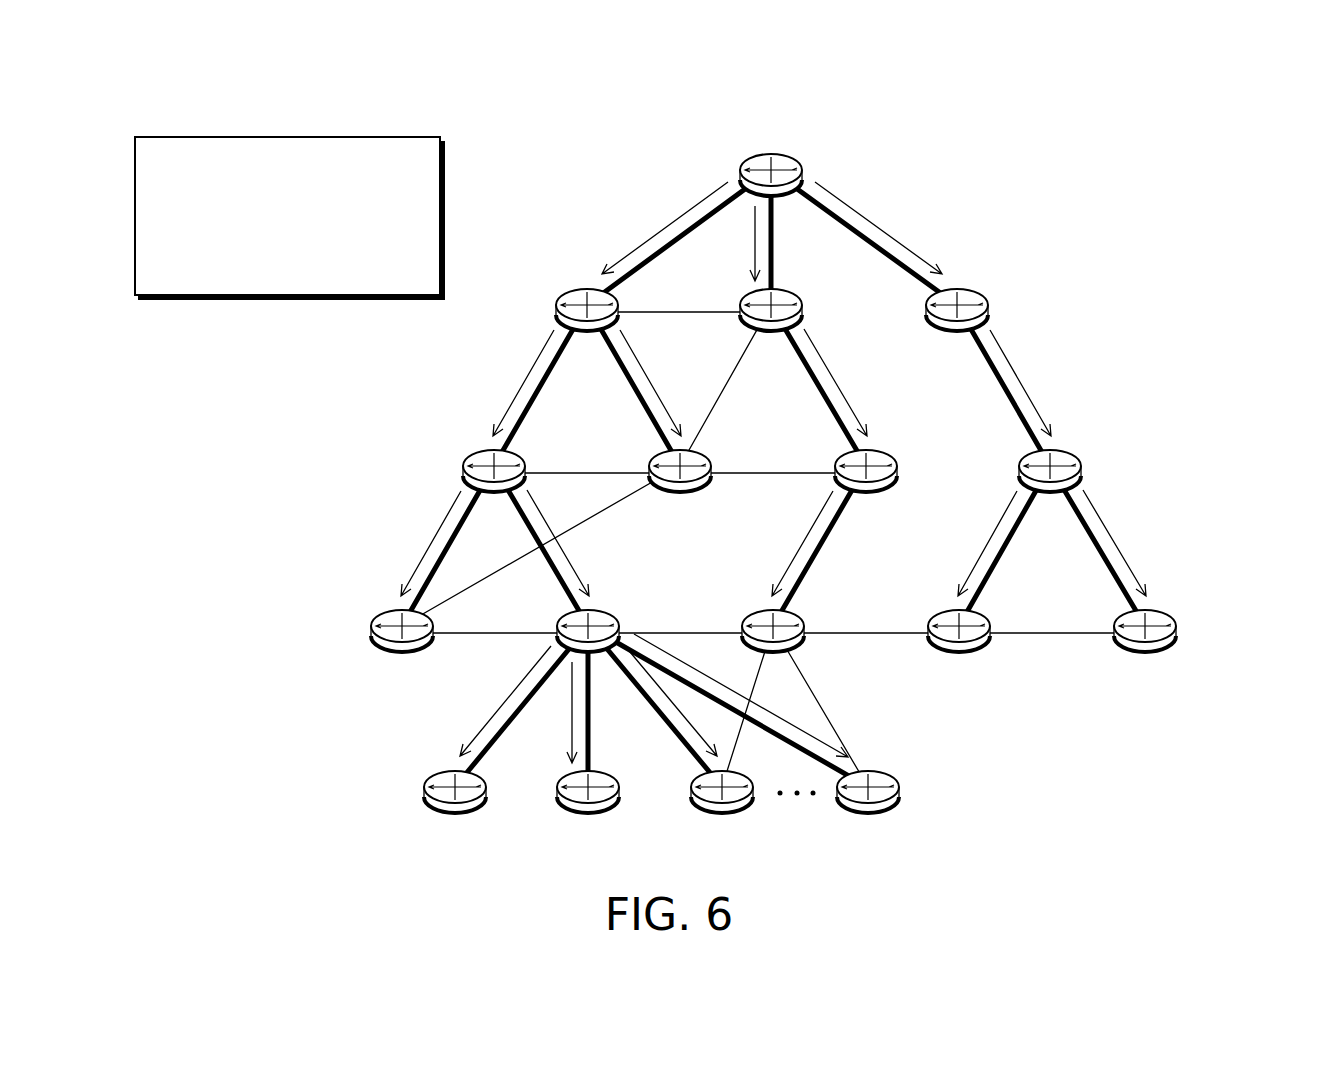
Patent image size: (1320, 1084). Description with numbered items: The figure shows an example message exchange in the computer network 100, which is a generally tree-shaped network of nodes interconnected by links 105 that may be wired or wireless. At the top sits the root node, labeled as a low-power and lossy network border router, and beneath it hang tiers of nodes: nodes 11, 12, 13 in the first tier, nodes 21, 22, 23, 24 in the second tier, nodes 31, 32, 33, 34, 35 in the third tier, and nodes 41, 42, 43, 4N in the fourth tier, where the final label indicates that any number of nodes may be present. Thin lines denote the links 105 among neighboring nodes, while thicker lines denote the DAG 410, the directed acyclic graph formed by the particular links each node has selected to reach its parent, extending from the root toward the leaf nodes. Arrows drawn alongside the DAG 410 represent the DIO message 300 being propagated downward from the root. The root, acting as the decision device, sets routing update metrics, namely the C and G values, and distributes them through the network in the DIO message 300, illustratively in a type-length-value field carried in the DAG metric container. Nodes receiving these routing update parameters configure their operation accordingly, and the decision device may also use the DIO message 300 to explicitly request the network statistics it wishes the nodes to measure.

The computer network 100 is at (1171, 146).
The links 105 is at (170, 165).
The DAG 410 is at (170, 214).
The DIO message 300 is at (170, 262).
The node 11 is at (587, 328).
The node 12 is at (771, 328).
The node 13 is at (957, 328).
The node 21 is at (494, 489).
The node 22 is at (680, 489).
The node 23 is at (866, 489).
The node 24 is at (1050, 489).
The node 31 is at (402, 649).
The node 32 is at (588, 649).
The node 33 is at (773, 649).
The node 34 is at (959, 649).
The node 35 is at (1145, 649).
The node 41 is at (455, 810).
The node 42 is at (588, 810).
The node 43 is at (722, 810).
The node 4N is at (868, 810).